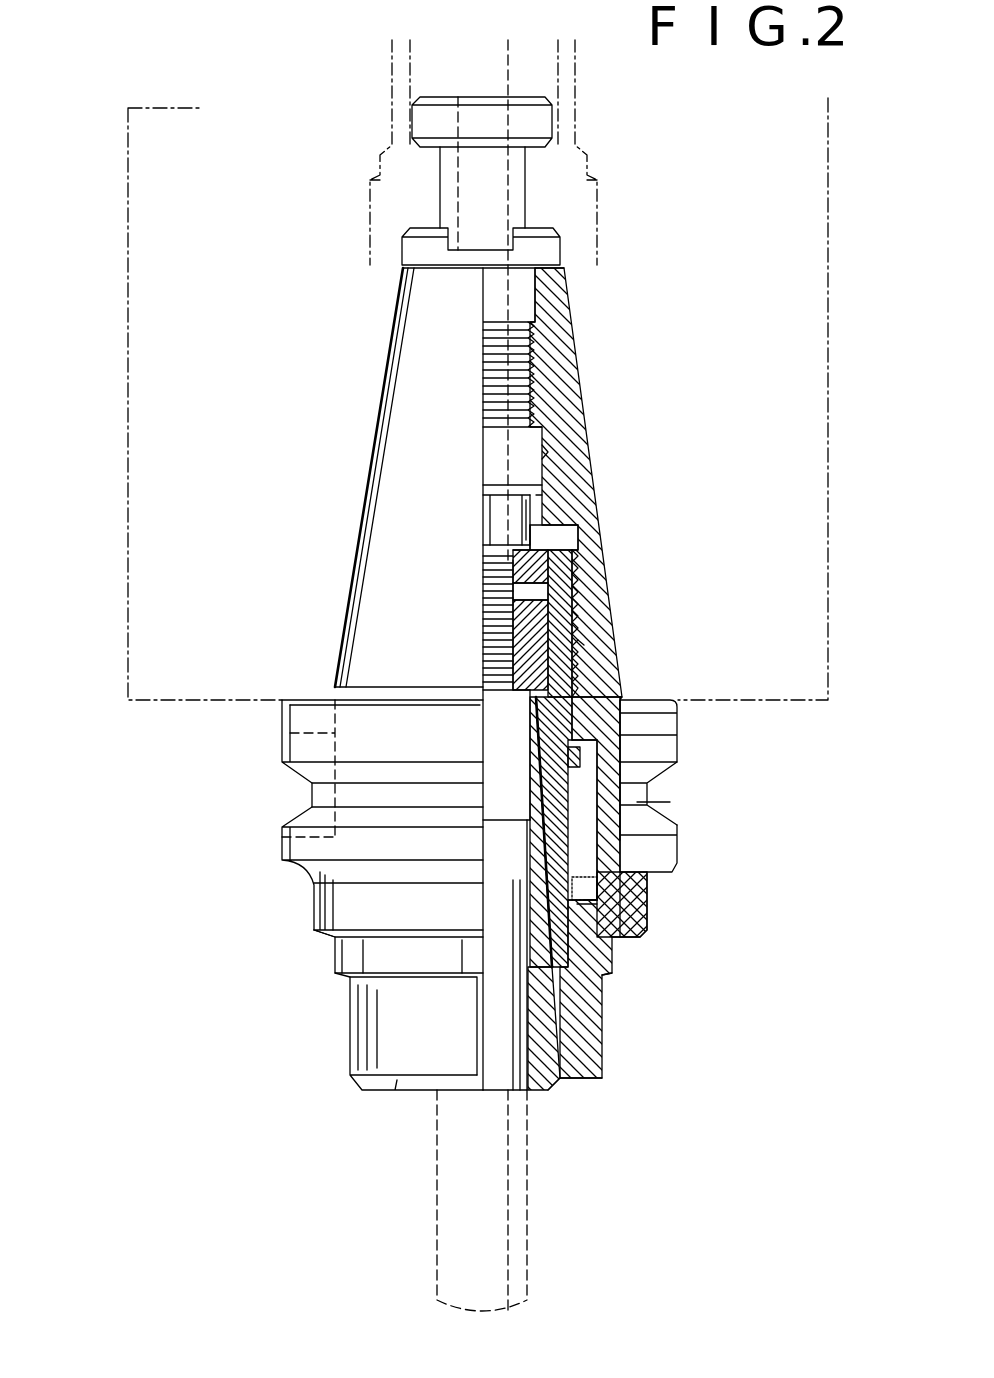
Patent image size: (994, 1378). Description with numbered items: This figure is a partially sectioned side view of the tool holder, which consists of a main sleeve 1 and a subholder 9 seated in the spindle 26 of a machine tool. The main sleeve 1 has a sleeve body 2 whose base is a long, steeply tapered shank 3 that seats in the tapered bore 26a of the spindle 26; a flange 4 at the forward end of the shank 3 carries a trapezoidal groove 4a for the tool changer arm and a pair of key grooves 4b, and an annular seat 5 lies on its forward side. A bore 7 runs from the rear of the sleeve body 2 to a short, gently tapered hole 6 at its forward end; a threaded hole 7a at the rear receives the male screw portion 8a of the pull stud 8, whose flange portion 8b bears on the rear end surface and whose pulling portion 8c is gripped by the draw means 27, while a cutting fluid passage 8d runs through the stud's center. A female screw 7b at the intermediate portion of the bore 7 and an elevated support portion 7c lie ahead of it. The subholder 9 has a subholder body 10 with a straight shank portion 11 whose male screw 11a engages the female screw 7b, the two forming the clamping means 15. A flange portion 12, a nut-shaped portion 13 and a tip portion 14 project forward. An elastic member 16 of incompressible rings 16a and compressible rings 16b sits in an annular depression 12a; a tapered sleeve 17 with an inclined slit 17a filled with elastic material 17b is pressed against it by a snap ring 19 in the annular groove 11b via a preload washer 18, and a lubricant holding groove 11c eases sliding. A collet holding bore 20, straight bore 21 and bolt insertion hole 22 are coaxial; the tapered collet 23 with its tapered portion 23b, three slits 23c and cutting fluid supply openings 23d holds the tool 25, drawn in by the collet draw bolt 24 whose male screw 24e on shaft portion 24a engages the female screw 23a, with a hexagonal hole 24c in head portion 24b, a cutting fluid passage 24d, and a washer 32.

The main sleeve 1 is at (400, 406).
The sleeve body 2 is at (380, 444).
The tapered shank 3 is at (370, 494).
The flange 4 is at (271, 767).
The groove 4a is at (312, 795).
The key grooves 4b is at (282, 728).
The annular seat 5 is at (310, 870).
The tapered hole 6 is at (625, 930).
The bore 7 is at (552, 448).
The threaded hole 7a is at (548, 376).
The female screw 7b is at (575, 598).
The elevated support portion 7c is at (600, 662).
The pull stud 8 is at (526, 197).
The male screw portion 8a is at (536, 340).
The flange portion 8b is at (553, 250).
The pulling portion 8c is at (548, 118).
The cutting fluid passage 8d is at (504, 130).
The subholder 9 is at (640, 710).
The subholder body 10 is at (338, 1006).
The straight shank portion 11 is at (582, 698).
The male screw 11a is at (562, 538).
The annular groove 11b is at (544, 749).
The lubricant holding groove 11c is at (543, 812).
The flange portion 12 is at (330, 912).
The annular depression 12a is at (610, 1000).
The nut-shaped portion 13 is at (360, 956).
The tip portion 14 is at (356, 1042).
The clamping means 15 is at (712, 518).
The elastic member 16 is at (768, 998).
The incompressible rings 16a is at (598, 905).
The compressible rings 16b is at (590, 902).
The tapered sleeve 17 is at (610, 858).
The slit 17a is at (595, 865).
The elastic material 17b is at (600, 896).
The washer 18 is at (670, 802).
The snap ring 19 is at (660, 745).
The collet holding bore 20 is at (575, 1040).
The straight bore 21 is at (492, 656).
The bolt insertion hole 22 is at (570, 542).
The tapered collet 23 is at (550, 1095).
The female screw 23a is at (545, 634).
The tapered portion 23b is at (572, 1088).
The slits 23c is at (506, 1092).
The cutting fluid supply opening 23d is at (540, 936).
The collet draw bolt 24 is at (548, 478).
The shaft portion 24a is at (516, 596).
The head portion 24b is at (500, 496).
The hexagonal hole 24c is at (528, 514).
The cutting fluid passage 24d is at (520, 556).
The male screw 24e is at (505, 618).
The tool 25 is at (452, 1233).
The spindle 26 is at (195, 100).
The tapered bore 26a is at (393, 326).
The draw means 27 is at (392, 80).
The washer 32 is at (560, 480).